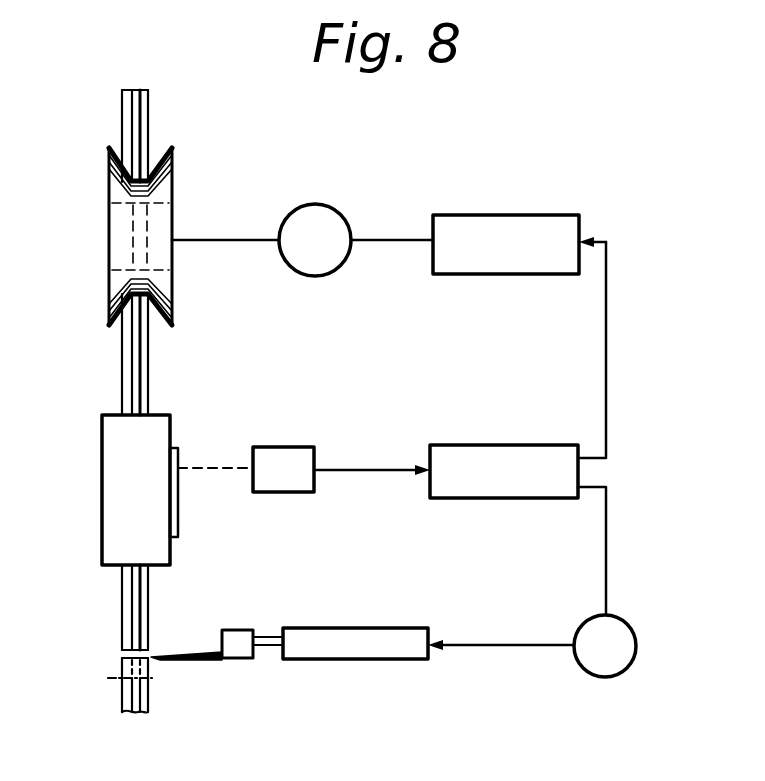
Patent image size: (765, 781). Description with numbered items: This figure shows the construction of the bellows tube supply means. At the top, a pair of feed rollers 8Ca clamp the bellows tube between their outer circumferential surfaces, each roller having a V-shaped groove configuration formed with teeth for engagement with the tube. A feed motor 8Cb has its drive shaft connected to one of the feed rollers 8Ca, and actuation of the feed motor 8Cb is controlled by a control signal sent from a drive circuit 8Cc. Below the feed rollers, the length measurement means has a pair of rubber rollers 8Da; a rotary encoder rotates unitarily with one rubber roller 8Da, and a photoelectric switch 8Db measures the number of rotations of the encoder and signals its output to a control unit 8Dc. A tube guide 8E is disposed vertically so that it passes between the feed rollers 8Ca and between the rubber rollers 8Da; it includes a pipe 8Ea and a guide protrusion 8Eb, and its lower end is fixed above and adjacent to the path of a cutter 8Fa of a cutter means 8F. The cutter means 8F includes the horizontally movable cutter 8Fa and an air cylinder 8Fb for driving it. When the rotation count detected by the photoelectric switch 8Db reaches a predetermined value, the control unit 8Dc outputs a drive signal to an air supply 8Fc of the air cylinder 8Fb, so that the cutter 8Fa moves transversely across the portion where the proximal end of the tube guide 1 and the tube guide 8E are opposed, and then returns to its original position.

The tube guide 8E is at (149, 114).
The feed roller 8Ca is at (172, 178).
The feed motor 8Cb is at (325, 218).
The drive circuit 8Cc is at (497, 215).
The pipe 8Ea is at (148, 345).
The guide protrusion 8Eb is at (122, 344).
The rubber roller 8Da is at (162, 415).
The photoelectric switch 8Db is at (288, 453).
The control unit 8Dc is at (468, 448).
The cutter means 8F is at (221, 656).
The cutter 8Fa is at (187, 656).
The air cylinder 8Fb is at (370, 628).
The air supply 8Fc is at (618, 619).
The tube guide 1 is at (120, 667).